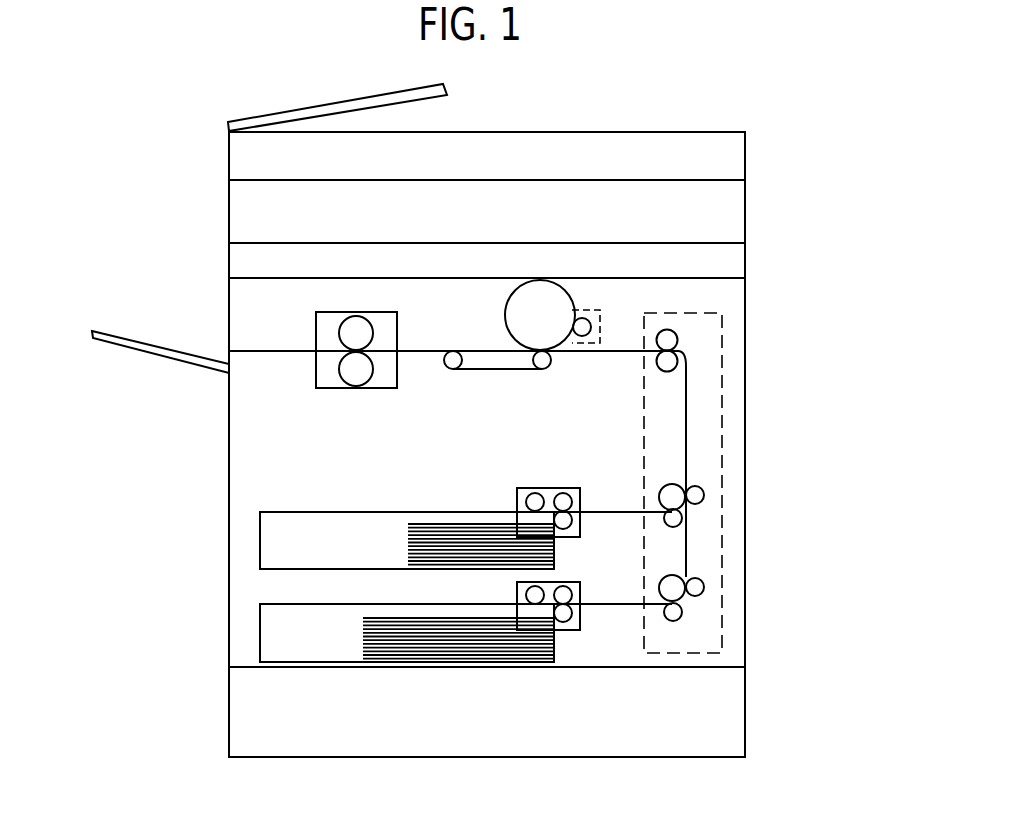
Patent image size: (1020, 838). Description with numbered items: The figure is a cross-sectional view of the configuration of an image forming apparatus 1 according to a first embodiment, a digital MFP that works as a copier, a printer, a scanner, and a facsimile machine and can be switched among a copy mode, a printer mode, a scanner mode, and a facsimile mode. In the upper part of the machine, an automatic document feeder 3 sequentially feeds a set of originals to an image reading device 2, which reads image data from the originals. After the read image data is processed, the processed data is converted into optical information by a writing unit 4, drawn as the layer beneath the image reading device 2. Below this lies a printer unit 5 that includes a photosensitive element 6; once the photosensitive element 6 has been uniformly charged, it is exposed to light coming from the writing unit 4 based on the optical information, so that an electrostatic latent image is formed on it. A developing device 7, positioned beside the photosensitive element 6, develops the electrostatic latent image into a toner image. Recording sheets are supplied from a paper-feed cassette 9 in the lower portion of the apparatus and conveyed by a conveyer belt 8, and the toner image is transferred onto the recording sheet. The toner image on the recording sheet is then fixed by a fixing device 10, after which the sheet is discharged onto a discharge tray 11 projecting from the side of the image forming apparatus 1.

The image forming apparatus 1 is at (656, 124).
The image reading device 2 is at (745, 207).
The automatic document feeder 3 is at (745, 161).
The writing unit 4 is at (745, 258).
The printer unit 5 is at (745, 541).
The photosensitive element 6 is at (505, 311).
The developing device 7 is at (605, 311).
The conveyer belt 8 is at (493, 372).
The paper-feed cassette 9 is at (260, 540).
The fixing device 10 is at (316, 377).
The discharge tray 11 is at (115, 330).